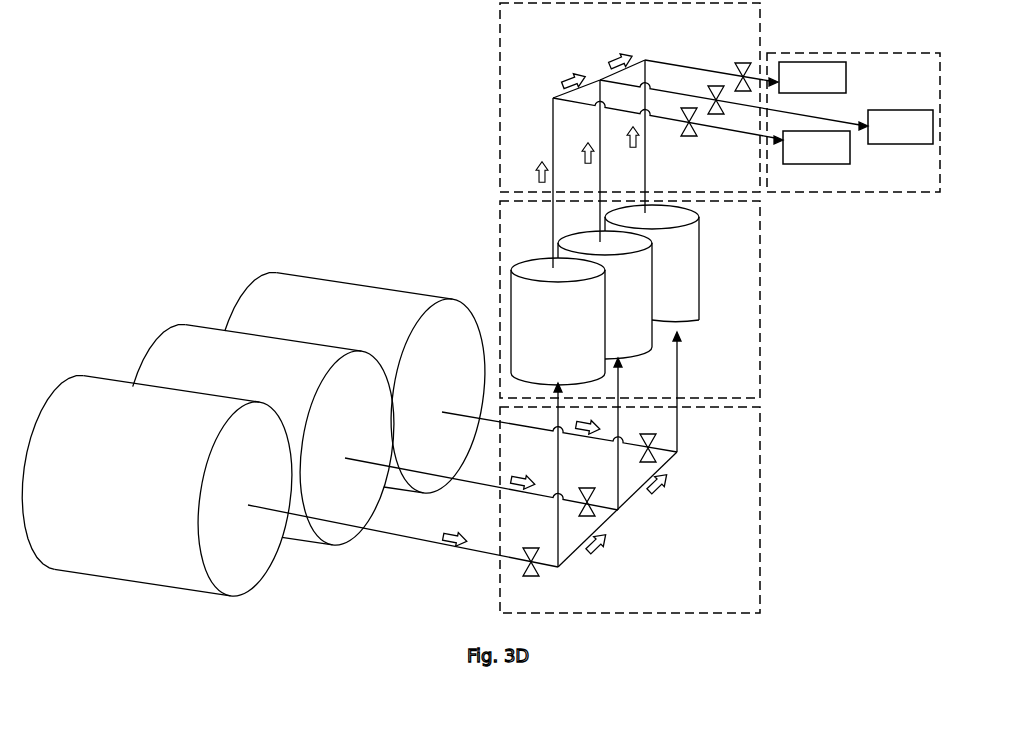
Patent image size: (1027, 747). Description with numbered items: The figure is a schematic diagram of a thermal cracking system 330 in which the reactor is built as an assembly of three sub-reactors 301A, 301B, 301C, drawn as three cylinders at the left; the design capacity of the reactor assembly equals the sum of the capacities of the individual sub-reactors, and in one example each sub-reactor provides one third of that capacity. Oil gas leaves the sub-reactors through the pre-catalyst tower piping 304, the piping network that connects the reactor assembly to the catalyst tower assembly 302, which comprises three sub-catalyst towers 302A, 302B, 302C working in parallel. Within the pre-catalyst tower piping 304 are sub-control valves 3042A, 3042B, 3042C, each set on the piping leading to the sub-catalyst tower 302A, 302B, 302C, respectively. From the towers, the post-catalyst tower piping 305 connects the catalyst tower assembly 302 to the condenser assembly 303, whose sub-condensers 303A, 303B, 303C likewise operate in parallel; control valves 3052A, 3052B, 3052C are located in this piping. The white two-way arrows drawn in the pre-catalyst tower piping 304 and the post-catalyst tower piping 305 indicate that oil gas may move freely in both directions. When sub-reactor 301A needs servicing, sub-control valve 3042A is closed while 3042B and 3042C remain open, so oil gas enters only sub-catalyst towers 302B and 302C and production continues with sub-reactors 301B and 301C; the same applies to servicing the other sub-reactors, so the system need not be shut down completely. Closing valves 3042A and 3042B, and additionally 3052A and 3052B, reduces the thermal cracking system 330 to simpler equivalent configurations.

The thermal cracking system 330 is at (319, 153).
The sub-reactor 301A is at (168, 419).
The sub-reactor 301B is at (257, 372).
The sub-reactor 301C is at (365, 312).
The catalyst tower assembly 302 is at (500, 240).
The sub-catalyst tower 302A is at (602, 365).
The sub-catalyst tower 302B is at (650, 342).
The sub-catalyst tower 302C is at (700, 319).
The condenser assembly 303 is at (865, 193).
The sub-condenser 303A is at (832, 155).
The sub-condenser 303B is at (916, 135).
The sub-condenser 303C is at (828, 86).
The pre-catalyst tower piping 304 is at (762, 497).
The sub-control valve 3042A is at (533, 573).
The sub-control valve 3042B is at (600, 495).
The sub-control valve 3042C is at (655, 436).
The post-catalyst tower piping 305 is at (500, 103).
The control valve 3052A is at (689, 137).
The control valve 3052B is at (716, 86).
The control valve 3052C is at (742, 63).